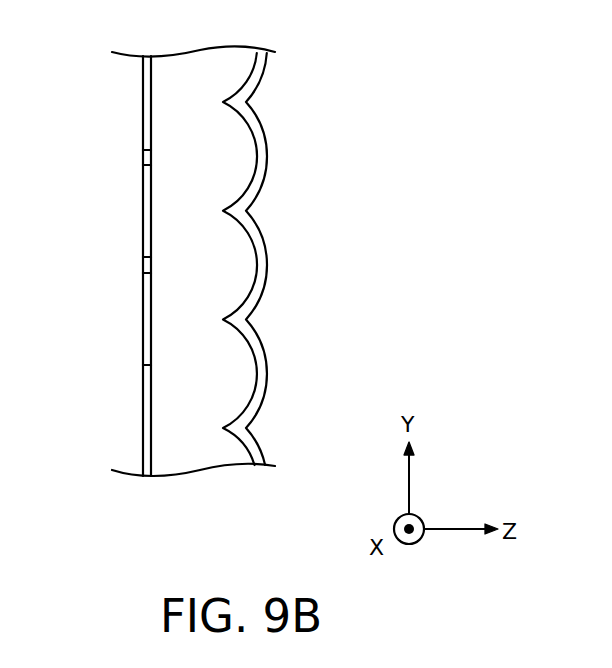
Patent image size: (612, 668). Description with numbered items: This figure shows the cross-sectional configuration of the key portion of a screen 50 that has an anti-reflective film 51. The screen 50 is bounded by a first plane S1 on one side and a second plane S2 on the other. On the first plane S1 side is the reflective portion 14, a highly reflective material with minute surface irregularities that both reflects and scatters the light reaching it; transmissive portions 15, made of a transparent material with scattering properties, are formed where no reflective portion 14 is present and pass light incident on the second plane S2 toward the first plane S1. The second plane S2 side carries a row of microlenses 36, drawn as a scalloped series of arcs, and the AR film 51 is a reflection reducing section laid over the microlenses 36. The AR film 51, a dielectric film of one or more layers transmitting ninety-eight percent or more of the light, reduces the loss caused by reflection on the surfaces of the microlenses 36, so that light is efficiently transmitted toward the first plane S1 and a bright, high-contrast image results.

The screen 50 is at (305, 72).
The reflective portion 14 is at (142, 103).
The transmissive portion 15 is at (142, 157).
The microlens 36 is at (258, 152).
The anti-reflective (AR) film 51 is at (259, 393).
The first plane S1 is at (133, 313).
The second plane S2 is at (276, 272).